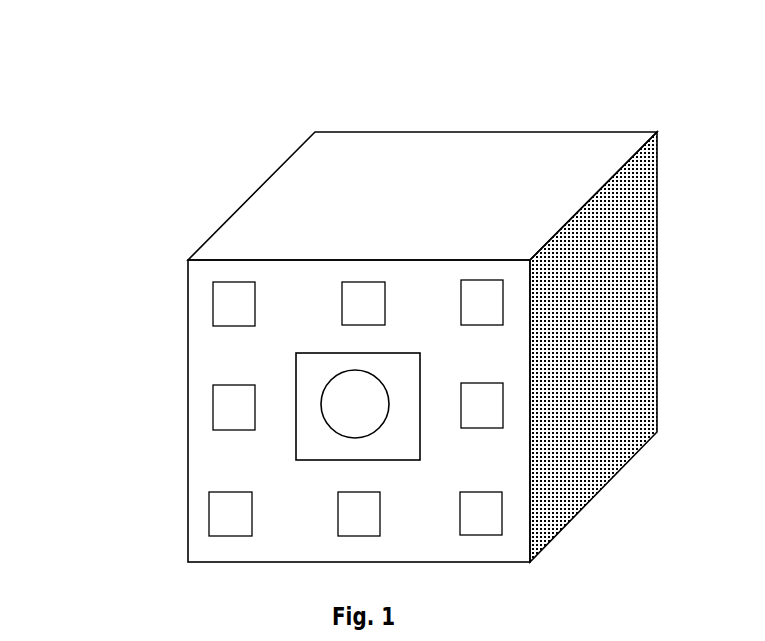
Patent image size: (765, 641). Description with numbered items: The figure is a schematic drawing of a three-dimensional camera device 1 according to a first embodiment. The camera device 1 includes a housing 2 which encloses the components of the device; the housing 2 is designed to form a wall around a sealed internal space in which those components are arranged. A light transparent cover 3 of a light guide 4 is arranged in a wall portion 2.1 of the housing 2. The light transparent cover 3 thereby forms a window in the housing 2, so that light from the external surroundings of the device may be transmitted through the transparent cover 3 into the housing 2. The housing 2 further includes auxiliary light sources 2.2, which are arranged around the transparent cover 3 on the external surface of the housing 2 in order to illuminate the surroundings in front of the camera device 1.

The 3D-camera device 1 is at (186, 102).
The housing 2 is at (186, 298).
The wall portion 2.1 is at (445, 455).
The auxiliary light sources 2.2 is at (503, 525).
The light transparent cover 3 is at (308, 378).
The light guide 4 is at (347, 428).